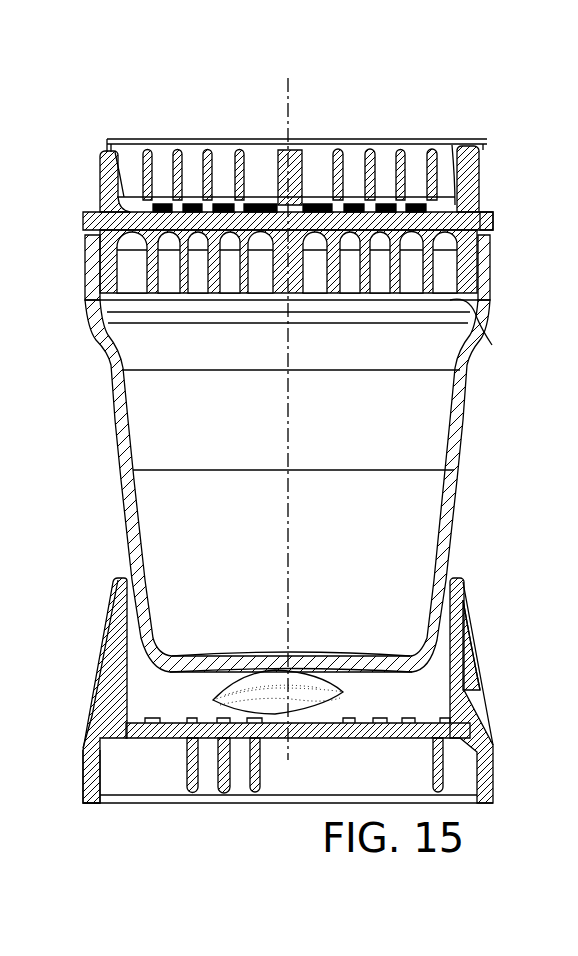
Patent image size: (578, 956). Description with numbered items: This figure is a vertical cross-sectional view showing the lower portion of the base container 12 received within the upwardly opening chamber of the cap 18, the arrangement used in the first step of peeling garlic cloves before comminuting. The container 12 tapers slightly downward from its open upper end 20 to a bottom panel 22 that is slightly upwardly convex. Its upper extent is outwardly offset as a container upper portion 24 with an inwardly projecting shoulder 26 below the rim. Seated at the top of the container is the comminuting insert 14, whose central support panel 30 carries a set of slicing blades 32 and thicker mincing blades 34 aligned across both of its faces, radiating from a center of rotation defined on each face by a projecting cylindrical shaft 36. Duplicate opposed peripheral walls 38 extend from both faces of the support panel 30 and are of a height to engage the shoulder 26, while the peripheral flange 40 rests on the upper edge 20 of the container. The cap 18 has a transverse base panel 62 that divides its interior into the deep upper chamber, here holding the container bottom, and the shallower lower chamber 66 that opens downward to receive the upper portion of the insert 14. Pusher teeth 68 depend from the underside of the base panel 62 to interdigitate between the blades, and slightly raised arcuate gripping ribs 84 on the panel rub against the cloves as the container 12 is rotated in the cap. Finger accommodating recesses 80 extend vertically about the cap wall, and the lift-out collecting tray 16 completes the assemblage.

The base container 12 is at (450, 436).
The comminuting insert 14 is at (480, 168).
The collecting tray 16 is at (448, 140).
The cap 18 is at (487, 718).
The open upper end 20 is at (487, 207).
The bottom panel 22 is at (200, 658).
The container upper portion 24 is at (490, 263).
The shoulder 26 is at (100, 262).
The support panel 30 is at (379, 158).
The slicing blades 32 is at (185, 158).
The mincing blades 34 is at (180, 296).
The cylindrical shaft 36 is at (290, 150).
The peripheral walls 38 is at (100, 165).
The peripheral flange 40 is at (497, 222).
The base panel 62 is at (345, 738).
The lower chamber 66 is at (136, 790).
The pusher teeth 68 is at (225, 792).
The finger accommodating recesses 80 is at (470, 680).
The gripping ribs 84 is at (195, 716).